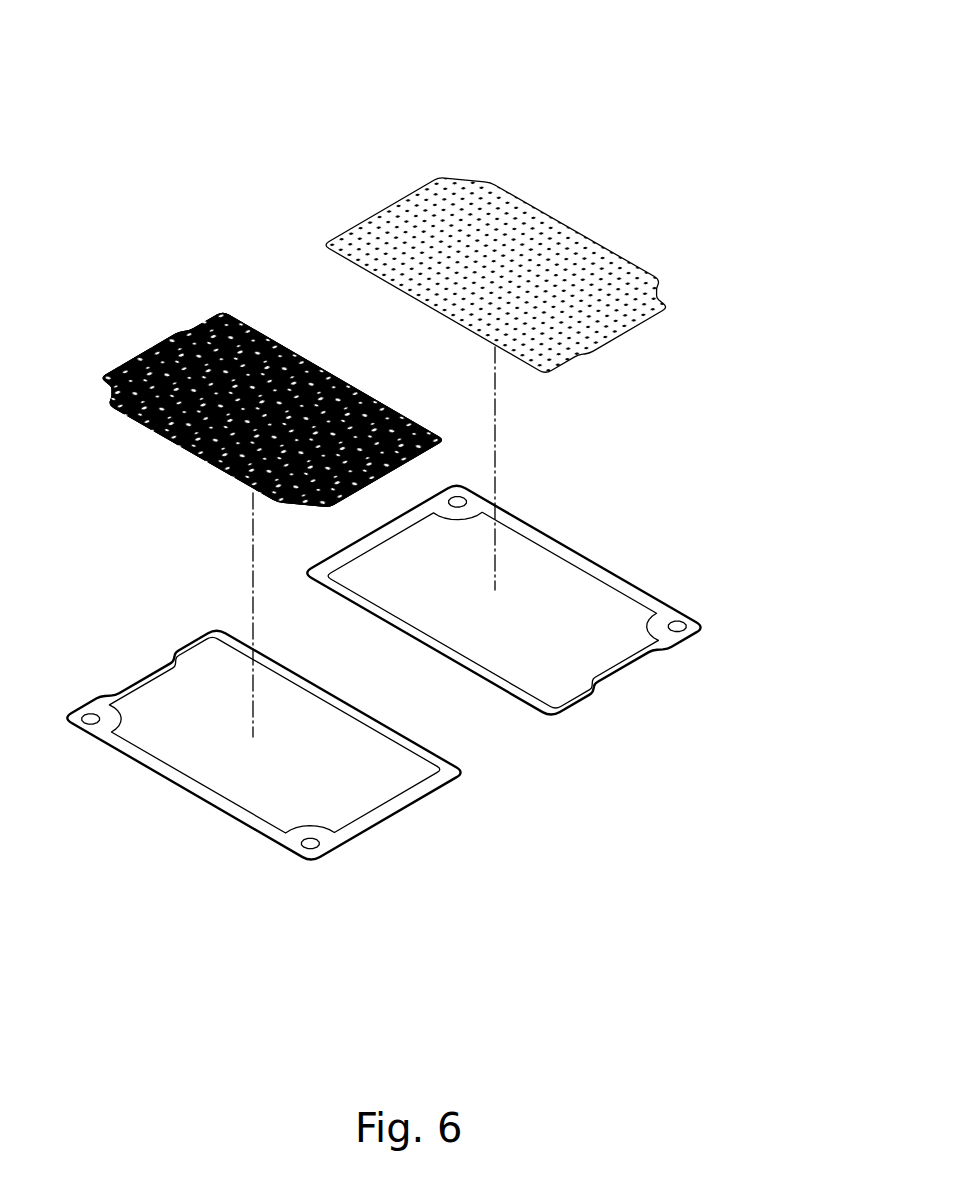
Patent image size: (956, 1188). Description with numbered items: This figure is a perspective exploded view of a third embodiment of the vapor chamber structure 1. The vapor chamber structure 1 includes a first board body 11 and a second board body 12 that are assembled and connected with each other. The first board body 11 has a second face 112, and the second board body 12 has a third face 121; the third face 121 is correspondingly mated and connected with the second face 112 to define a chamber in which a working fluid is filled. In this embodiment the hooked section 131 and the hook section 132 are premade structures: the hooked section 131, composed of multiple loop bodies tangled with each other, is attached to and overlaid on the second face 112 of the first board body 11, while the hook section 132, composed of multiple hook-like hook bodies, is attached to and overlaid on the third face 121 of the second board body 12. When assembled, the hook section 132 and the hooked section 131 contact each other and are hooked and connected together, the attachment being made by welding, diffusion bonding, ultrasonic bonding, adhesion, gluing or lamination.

The vapor chamber structure 1 is at (670, 115).
The first board body 11 is at (367, 817).
The second face 112 is at (262, 785).
The second board body 12 is at (590, 701).
The third face 121 is at (540, 603).
The hooked section 131 is at (153, 347).
The hook section 132 is at (443, 243).